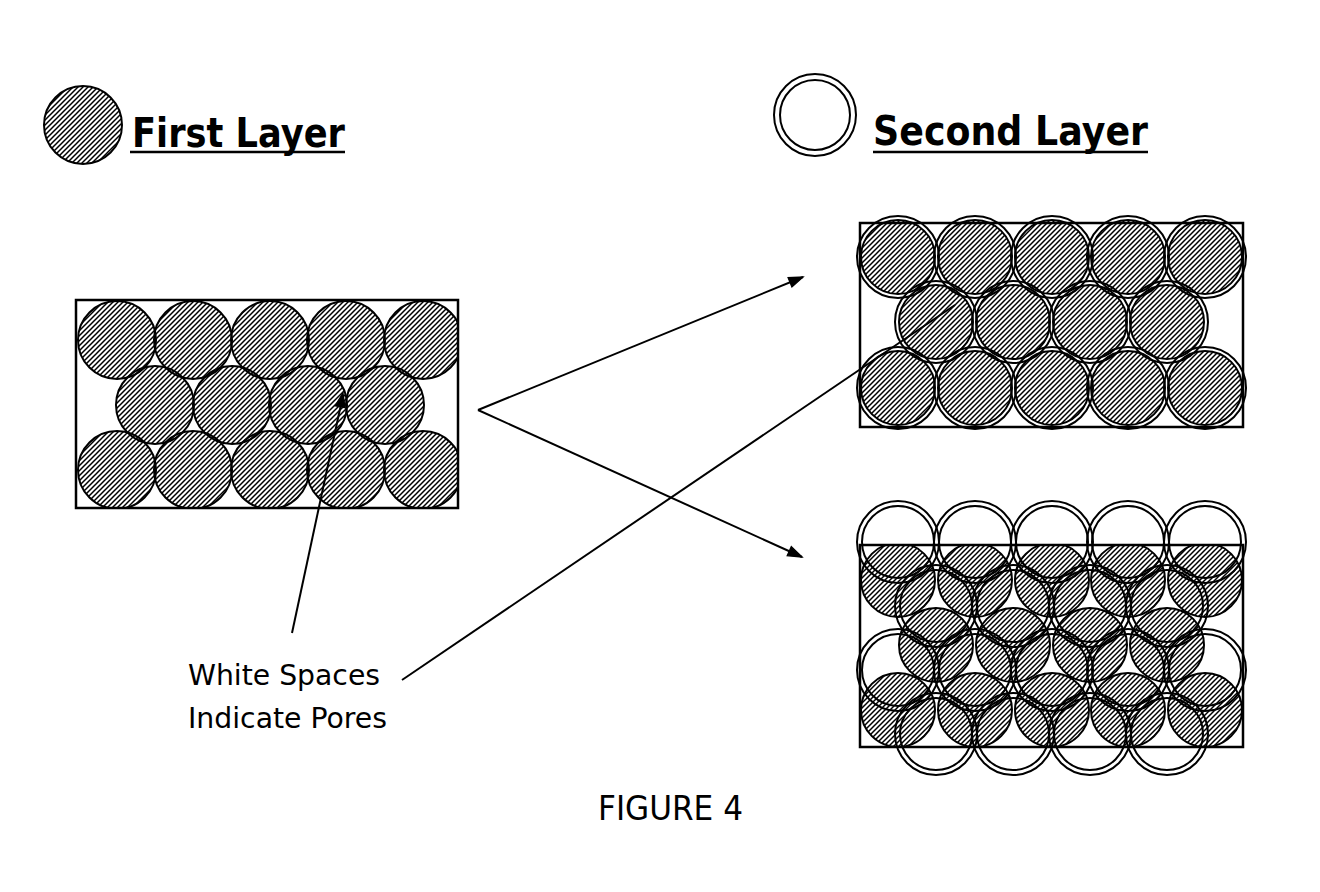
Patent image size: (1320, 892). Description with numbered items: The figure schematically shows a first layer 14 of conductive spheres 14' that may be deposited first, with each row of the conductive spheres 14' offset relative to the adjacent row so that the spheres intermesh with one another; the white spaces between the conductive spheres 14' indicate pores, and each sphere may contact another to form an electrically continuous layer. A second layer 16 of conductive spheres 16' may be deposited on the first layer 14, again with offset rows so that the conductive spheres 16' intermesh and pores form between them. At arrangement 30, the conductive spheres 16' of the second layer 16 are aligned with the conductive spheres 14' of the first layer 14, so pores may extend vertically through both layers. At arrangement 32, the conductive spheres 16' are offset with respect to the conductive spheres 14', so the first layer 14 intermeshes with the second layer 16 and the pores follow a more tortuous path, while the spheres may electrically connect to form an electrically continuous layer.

The conductive spheres of the first layer 14' is at (108, 105).
The conductive spheres of the second layer 16' is at (847, 93).
The first layer 14 is at (697, 399).
The second layer 16 is at (1080, 469).
The arrangement 30 is at (830, 240).
The arrangement 32 is at (848, 737).